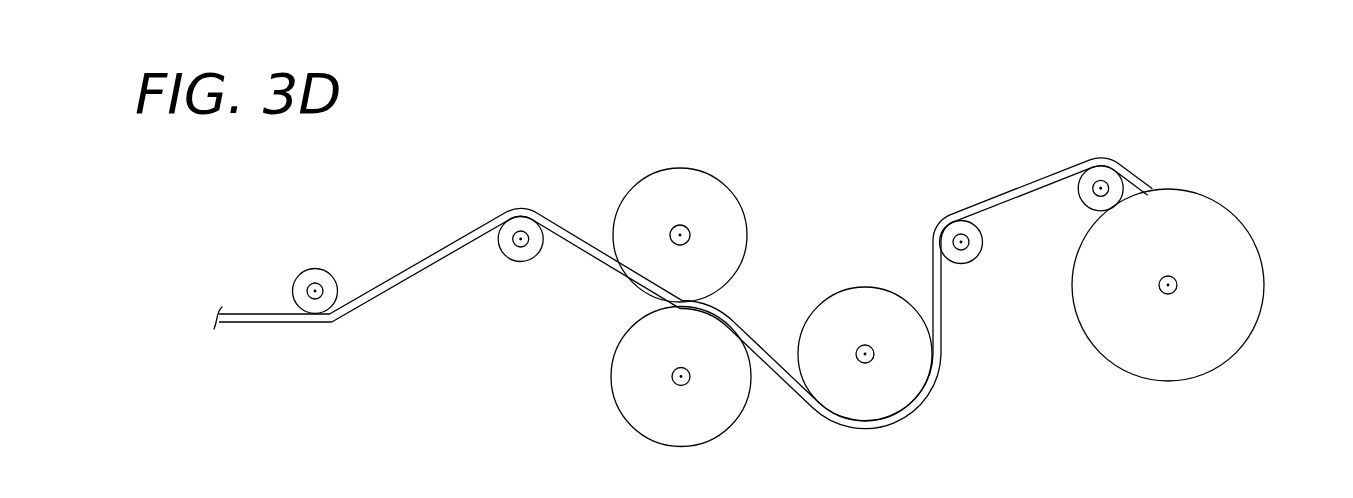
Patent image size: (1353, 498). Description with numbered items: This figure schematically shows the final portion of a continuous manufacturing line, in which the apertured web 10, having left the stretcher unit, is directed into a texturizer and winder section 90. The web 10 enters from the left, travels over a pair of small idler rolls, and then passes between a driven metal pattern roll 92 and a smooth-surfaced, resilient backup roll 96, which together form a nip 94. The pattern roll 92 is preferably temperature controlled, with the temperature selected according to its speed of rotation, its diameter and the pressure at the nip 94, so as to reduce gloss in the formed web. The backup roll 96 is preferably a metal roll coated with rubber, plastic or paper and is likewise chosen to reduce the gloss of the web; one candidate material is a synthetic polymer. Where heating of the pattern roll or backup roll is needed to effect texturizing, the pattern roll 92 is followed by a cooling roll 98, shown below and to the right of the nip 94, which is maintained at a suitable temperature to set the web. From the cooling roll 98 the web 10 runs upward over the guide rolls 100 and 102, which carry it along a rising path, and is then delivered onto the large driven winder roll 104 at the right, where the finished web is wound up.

The apertured web 10 is at (382, 268).
The texturizer and winder section 90 is at (772, 180).
The driven metal pattern roll 92 is at (676, 173).
The nip 94 is at (705, 303).
The backup roll 96 is at (728, 405).
The cooling roll 98 is at (857, 294).
The guide roll 100 is at (978, 249).
The guide roll 102 is at (1095, 200).
The driven winder roll 104 is at (1203, 202).